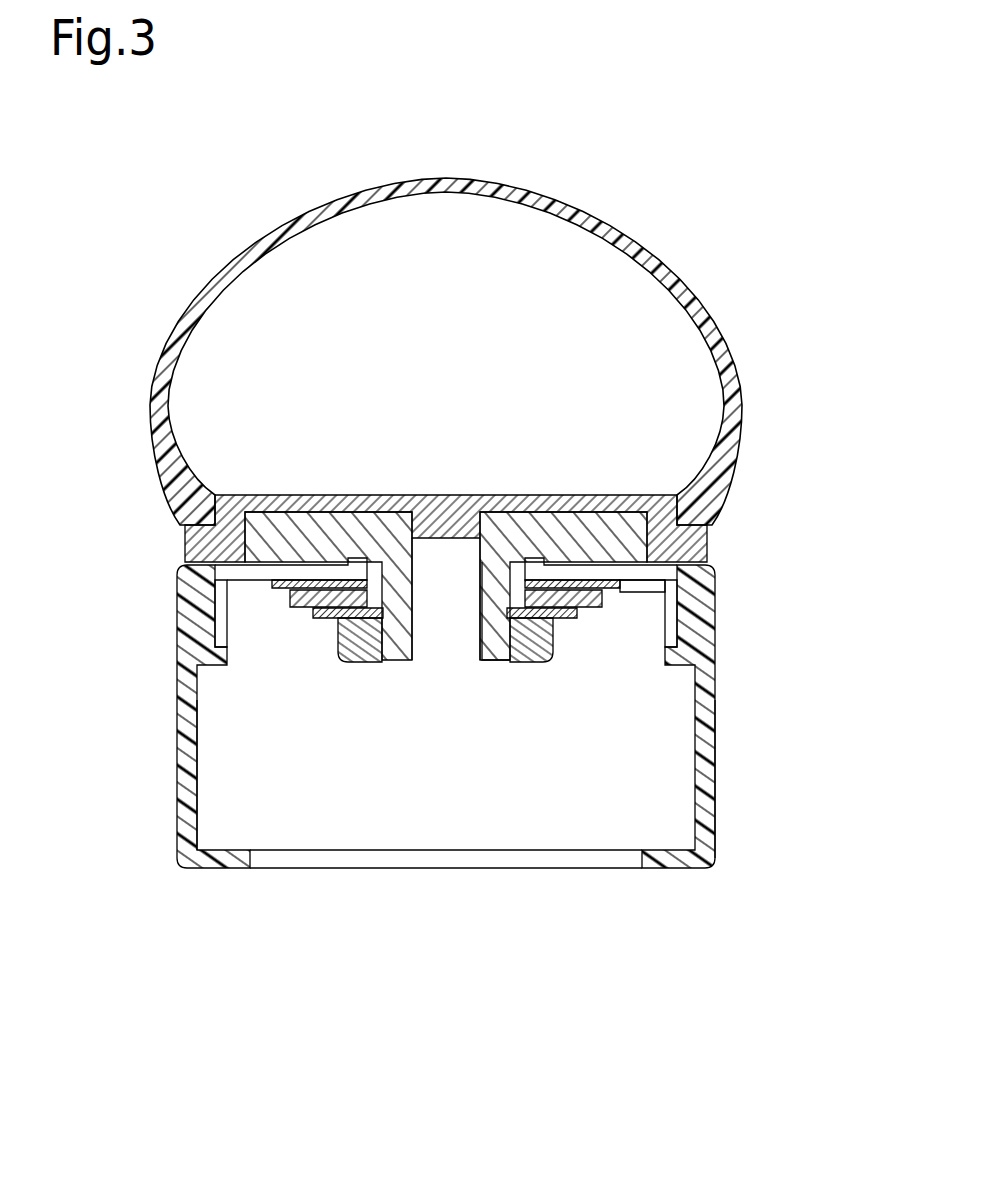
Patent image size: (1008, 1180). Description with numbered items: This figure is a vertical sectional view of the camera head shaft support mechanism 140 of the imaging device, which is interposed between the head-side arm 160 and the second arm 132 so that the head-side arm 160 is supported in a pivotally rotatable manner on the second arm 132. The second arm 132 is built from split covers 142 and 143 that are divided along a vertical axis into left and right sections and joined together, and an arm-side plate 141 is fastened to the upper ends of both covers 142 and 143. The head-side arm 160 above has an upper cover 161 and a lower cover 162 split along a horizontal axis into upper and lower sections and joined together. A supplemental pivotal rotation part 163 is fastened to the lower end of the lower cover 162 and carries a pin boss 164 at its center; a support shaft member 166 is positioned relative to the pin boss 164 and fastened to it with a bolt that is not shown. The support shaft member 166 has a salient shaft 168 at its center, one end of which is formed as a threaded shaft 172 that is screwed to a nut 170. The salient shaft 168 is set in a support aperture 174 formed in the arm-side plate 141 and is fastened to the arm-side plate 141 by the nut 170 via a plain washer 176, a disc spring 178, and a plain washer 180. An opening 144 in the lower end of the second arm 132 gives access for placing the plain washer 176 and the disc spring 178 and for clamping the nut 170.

The second arm 132 is at (149, 857).
The camera head shaft support mechanism 140 is at (444, 786).
The arm-side plate 141 is at (712, 610).
The split cover 142 is at (177, 612).
The split cover 143 is at (717, 760).
The opening 144 is at (580, 865).
The head-side arm 160 is at (426, 351).
The upper cover 161 is at (675, 267).
The lower cover 162 is at (733, 512).
The supplemental pivotal rotation part 163 is at (277, 512).
The pin boss 164 is at (445, 545).
The support shaft member 166 is at (565, 528).
The salient shaft 168 is at (553, 648).
The nut 170 is at (525, 663).
The threaded shaft 172 is at (493, 657).
The support aperture 174 is at (382, 625).
The plain washer 176 is at (285, 582).
The disc spring 178 is at (302, 606).
The plain washer 180 is at (325, 618).